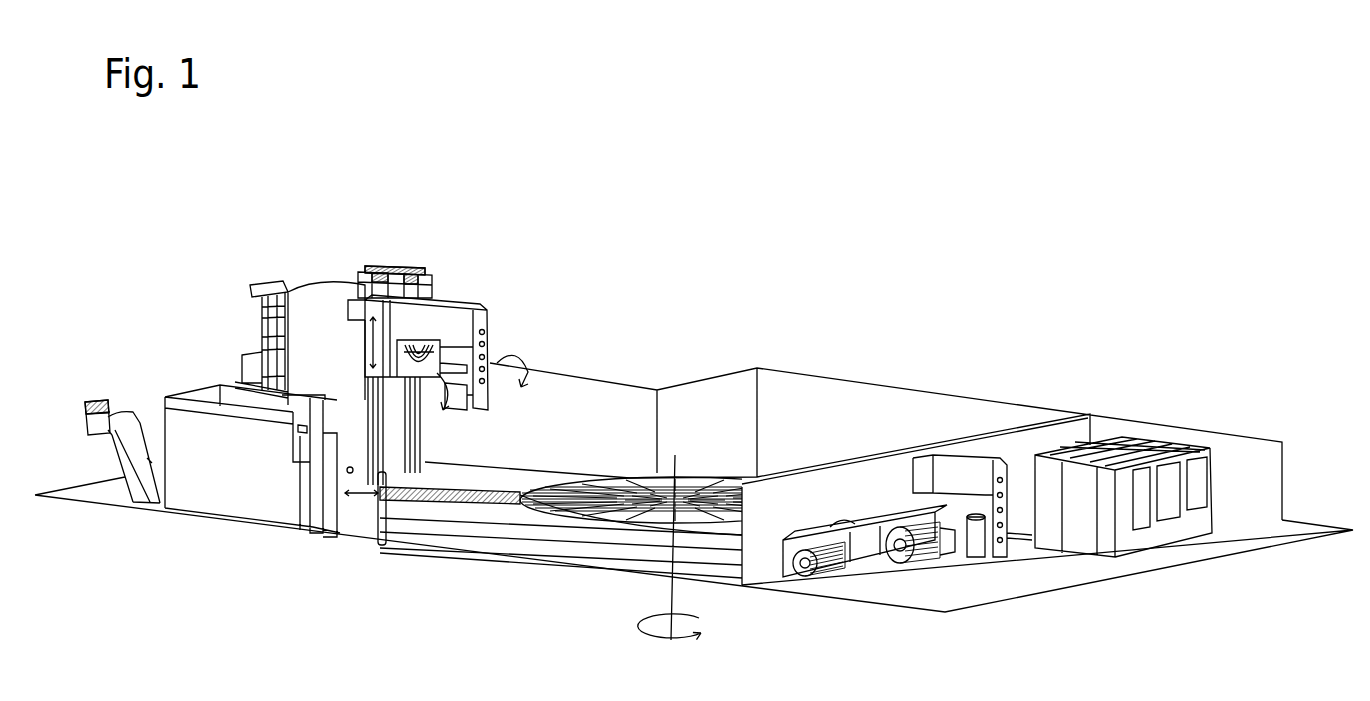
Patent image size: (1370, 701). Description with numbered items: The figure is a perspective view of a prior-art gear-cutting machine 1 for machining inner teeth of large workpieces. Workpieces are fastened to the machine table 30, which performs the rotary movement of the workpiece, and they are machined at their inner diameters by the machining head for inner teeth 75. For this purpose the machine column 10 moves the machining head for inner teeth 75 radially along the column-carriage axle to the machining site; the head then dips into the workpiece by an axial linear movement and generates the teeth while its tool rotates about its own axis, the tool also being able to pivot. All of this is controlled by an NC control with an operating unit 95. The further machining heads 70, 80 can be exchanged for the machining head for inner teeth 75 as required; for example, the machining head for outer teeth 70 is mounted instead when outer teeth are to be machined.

The gear-cutting machine 1 is at (694, 424).
The machine column 10 is at (308, 310).
The machine table 30 is at (535, 519).
The machining head for outer teeth 70 is at (937, 553).
The machining head for inner teeth 75 is at (448, 322).
The further machining head 80 is at (1005, 563).
The operating unit 95 is at (301, 448).